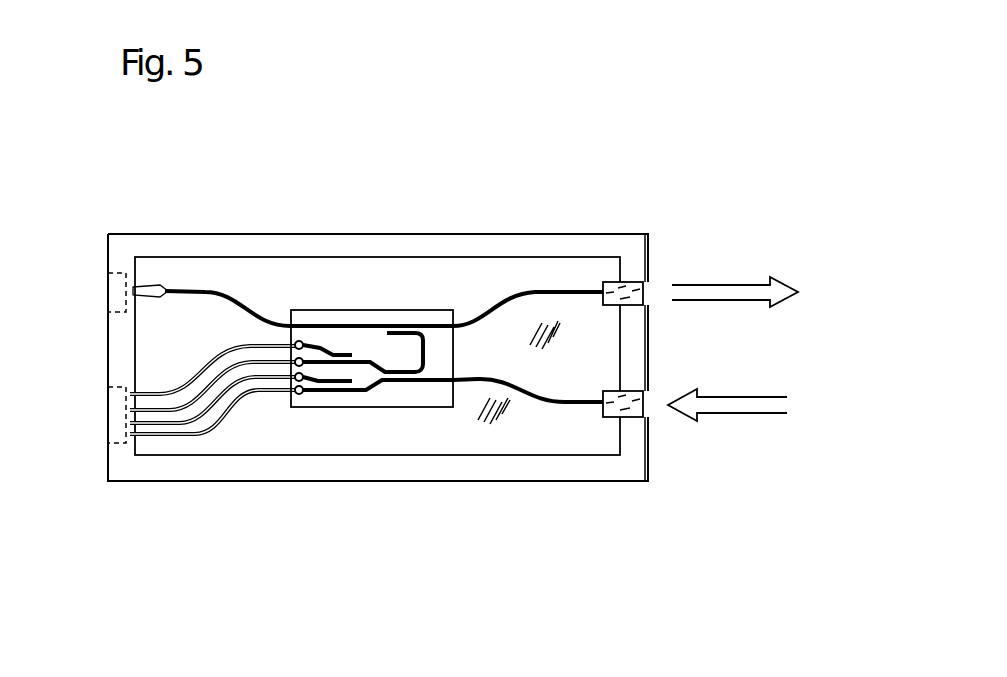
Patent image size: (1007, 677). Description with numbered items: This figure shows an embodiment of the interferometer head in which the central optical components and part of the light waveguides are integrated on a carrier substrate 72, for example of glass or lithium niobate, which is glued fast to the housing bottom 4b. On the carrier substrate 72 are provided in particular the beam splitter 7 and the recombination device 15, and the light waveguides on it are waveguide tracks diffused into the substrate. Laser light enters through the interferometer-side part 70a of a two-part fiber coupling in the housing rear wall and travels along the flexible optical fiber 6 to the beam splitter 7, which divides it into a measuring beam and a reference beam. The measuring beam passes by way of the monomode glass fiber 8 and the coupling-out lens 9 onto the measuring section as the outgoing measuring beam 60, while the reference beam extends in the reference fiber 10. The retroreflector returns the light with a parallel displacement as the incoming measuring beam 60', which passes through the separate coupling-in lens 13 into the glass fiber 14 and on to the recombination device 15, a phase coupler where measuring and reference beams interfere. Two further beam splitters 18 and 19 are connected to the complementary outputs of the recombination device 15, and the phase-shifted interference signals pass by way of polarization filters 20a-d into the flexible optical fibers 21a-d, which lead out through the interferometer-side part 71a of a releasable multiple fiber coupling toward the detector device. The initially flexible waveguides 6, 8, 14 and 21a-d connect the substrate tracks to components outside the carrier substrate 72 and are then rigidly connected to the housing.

The housing bottom 4b is at (494, 437).
The flexible optical fiber 6 is at (234, 308).
The beam splitter 7 is at (402, 314).
The monomode glass fiber 8 is at (545, 290).
The coupling-out lens 9 is at (624, 290).
The reference fiber 10 is at (433, 372).
The coupling-in lens 13 is at (628, 417).
The glass fiber 14 is at (546, 402).
The recombination device 15 is at (408, 387).
The beam splitter 18 is at (333, 352).
The beam splitter 19 is at (337, 409).
The polarization filters 20a-d is at (299, 409).
The flexible optical fibers 21a-d is at (182, 445).
The outgoing measuring beam 60 is at (735, 238).
The incoming measuring beam 60' is at (727, 452).
The part of the fiber coupling 70a is at (107, 293).
The part of the fiber coupling 71a is at (117, 417).
The carrier substrate 72 is at (378, 408).